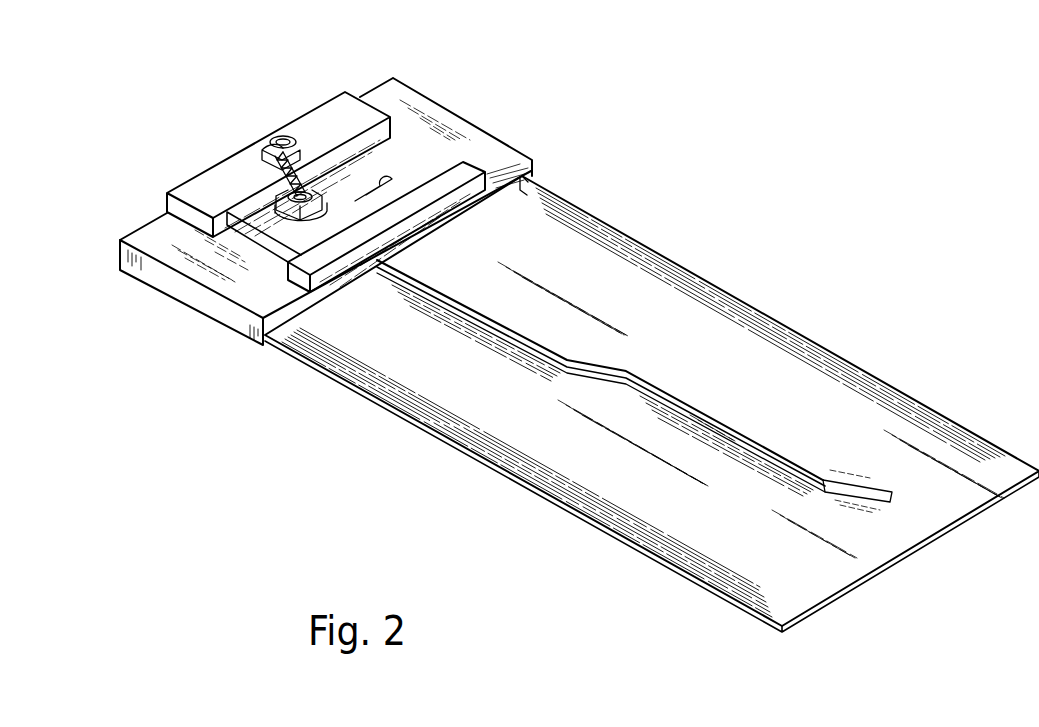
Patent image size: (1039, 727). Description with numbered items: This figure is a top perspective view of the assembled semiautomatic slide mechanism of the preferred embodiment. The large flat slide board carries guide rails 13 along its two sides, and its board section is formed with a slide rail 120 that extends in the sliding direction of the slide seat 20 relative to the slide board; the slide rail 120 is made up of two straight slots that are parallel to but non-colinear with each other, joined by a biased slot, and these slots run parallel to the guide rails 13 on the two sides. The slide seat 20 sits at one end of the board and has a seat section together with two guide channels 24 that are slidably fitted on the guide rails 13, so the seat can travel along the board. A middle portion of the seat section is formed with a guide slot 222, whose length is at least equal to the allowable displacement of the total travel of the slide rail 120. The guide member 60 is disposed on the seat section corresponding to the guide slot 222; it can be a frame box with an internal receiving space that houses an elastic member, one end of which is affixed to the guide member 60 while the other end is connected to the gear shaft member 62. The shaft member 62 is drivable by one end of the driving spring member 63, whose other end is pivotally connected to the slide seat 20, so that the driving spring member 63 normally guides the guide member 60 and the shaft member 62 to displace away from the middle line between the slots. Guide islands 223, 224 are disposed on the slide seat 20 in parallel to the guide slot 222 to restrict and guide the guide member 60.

The guide rails 13 is at (757, 303).
The slide seat 20 is at (247, 297).
The guide channels 24 is at (547, 183).
The guide member 60 is at (222, 229).
The gear shaft member 62 is at (379, 268).
The driving spring member 63 is at (268, 175).
The slide rail 120 is at (520, 338).
The guide slot 222 is at (450, 166).
The guide island 223 is at (335, 122).
The guide island 224 is at (343, 245).